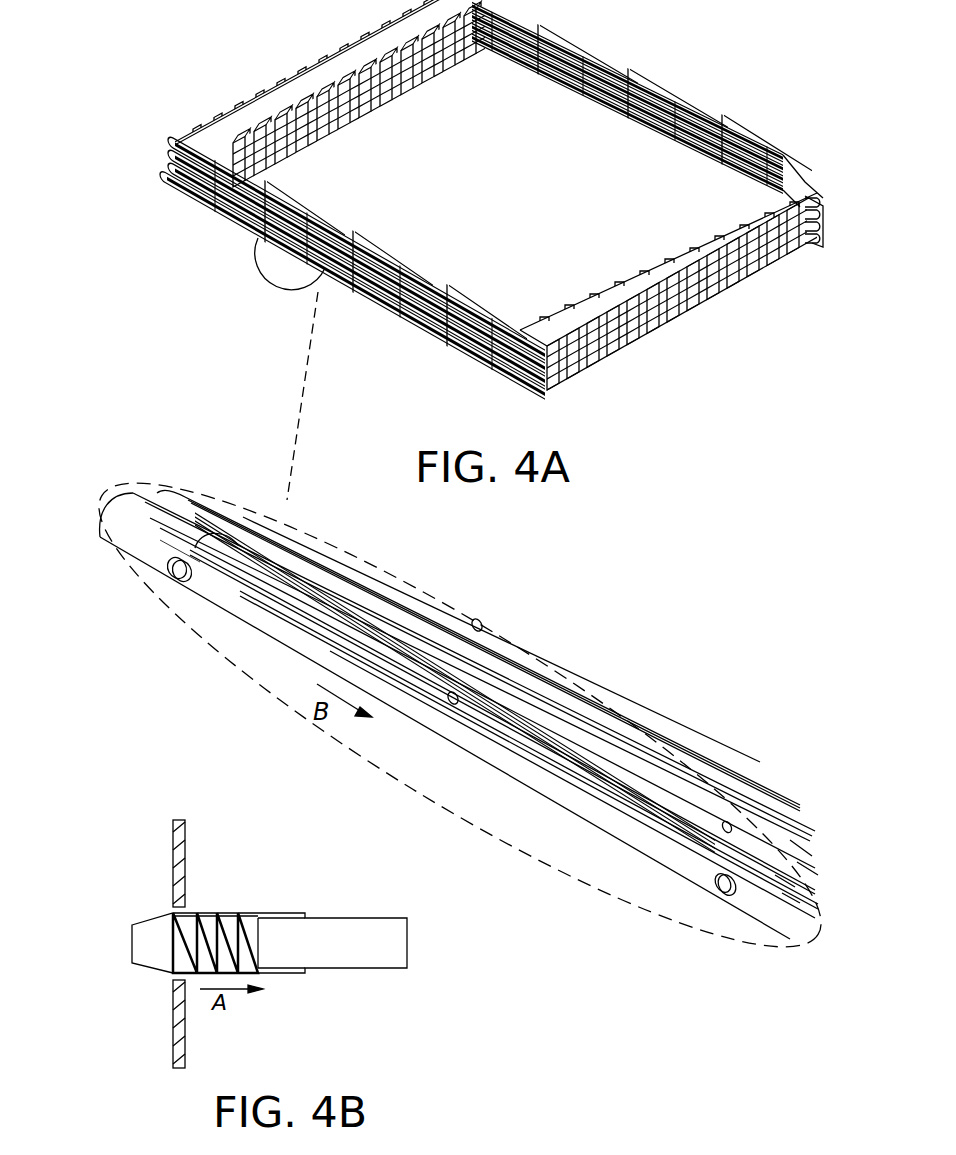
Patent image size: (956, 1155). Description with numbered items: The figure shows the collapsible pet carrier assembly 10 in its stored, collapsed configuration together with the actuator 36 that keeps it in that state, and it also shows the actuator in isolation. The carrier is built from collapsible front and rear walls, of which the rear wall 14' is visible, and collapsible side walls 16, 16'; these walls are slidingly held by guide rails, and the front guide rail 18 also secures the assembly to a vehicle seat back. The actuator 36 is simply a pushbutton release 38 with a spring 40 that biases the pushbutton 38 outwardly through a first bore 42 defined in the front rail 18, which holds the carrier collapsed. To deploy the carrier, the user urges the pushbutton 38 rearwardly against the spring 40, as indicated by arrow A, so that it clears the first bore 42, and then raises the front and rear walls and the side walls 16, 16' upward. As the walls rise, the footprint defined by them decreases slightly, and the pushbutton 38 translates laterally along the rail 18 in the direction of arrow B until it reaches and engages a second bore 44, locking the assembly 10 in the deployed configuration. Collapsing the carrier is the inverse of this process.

In FIG. 4A, the collapsible pet carrier assembly 10 is at (726, 57).
In FIG. 4A, the rear wall 14' is at (647, 121).
In FIG. 4A, the side wall 16 is at (330, 109).
In FIG. 4A, the side wall 16' is at (671, 291).
In FIG. 4A, the front guide rail 18 is at (143, 547).
In FIG. 4B, the front guide rail 18 is at (170, 855).
In FIG. 4A, the actuator 36 is at (250, 238).
In FIG. 4A, the pushbutton release 38 is at (173, 582).
In FIG. 4B, the pushbutton release 38 is at (141, 922).
In FIG. 4B, the spring 40 is at (222, 920).
In FIG. 4B, the first bore 42 is at (186, 911).
In FIG. 4A, the second bore 44 is at (350, 283).